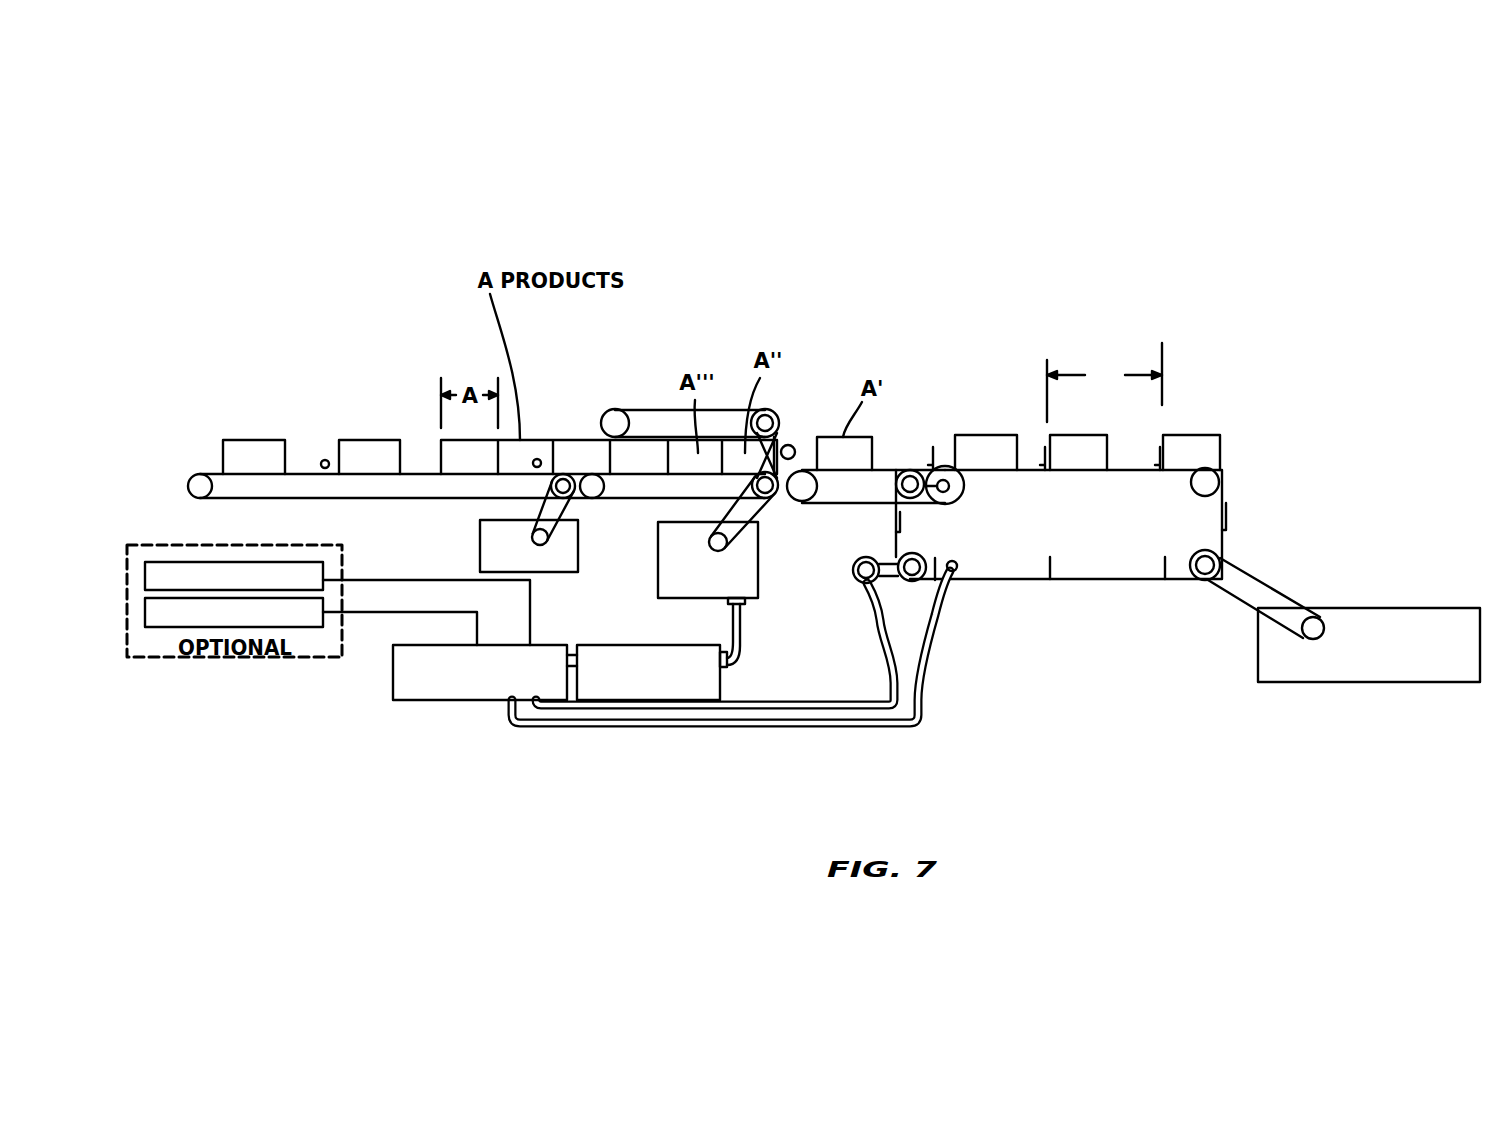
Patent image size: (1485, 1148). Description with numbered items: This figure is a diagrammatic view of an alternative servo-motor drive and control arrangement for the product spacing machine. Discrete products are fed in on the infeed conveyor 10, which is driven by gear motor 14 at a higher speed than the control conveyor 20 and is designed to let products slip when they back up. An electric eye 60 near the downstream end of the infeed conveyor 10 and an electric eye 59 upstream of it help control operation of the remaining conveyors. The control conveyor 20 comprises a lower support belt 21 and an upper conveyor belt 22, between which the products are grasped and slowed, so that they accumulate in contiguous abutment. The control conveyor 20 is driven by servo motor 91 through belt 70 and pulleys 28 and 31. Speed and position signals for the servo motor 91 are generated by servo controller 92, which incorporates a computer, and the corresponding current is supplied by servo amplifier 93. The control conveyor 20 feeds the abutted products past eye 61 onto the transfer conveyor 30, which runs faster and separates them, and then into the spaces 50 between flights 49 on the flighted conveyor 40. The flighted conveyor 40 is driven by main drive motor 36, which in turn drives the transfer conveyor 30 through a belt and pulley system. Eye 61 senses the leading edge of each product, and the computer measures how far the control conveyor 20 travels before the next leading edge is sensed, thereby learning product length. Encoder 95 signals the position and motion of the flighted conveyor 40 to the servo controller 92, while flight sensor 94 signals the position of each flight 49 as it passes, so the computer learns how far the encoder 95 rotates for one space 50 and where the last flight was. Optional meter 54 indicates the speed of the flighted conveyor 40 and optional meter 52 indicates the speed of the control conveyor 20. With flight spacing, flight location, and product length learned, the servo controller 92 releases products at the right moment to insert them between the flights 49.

The infeed conveyor 10 is at (476, 406).
The gear motor 14 is at (480, 545).
The control conveyor 20 is at (690, 378).
The lower support belt 21 is at (625, 472).
The upper conveyor belt 22 is at (722, 410).
The pulley 28 is at (757, 478).
The transfer conveyor 30 is at (887, 467).
The pulley 31 is at (712, 540).
The main drive motor 36 is at (1360, 608).
The flighted conveyor 40 is at (1100, 462).
The flights 49 is at (1165, 563).
The spaces 50 is at (1104, 382).
The meter 52 is at (152, 628).
The meter 54 is at (157, 562).
The electric eye 59 is at (325, 460).
The electric eye 60 is at (538, 459).
The eye 61 is at (790, 445).
The belt 70 is at (760, 502).
The servo motor 91 is at (672, 598).
The servo controller 92 is at (413, 700).
The servo amplifier 93 is at (660, 700).
The flight sensor 94 is at (957, 575).
The encoder 95 is at (855, 576).